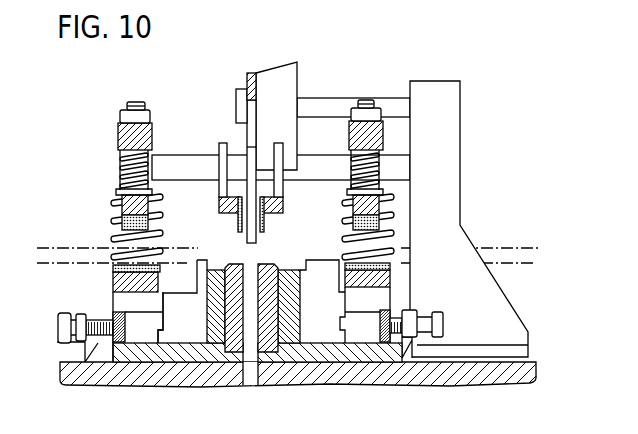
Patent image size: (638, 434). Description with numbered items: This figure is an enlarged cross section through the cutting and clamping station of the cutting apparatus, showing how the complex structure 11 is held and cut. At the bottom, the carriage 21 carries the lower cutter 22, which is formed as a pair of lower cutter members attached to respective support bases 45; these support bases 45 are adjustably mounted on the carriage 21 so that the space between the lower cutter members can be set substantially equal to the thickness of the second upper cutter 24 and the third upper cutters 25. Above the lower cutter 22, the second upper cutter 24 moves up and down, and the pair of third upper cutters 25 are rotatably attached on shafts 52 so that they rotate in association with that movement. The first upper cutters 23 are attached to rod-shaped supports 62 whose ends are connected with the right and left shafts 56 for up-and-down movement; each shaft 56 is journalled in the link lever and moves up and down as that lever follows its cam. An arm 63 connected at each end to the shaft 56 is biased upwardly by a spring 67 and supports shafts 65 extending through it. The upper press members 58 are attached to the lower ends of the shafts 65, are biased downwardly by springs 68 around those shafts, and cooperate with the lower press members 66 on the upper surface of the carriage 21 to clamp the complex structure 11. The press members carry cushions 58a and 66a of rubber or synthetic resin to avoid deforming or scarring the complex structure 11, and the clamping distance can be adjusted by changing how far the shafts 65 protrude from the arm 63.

The complex structure 11 is at (538, 251).
The carriage 21 is at (533, 368).
The lower cutter 22 is at (258, 268).
The first upper cutters 23 is at (238, 222).
The second upper cutter 24 is at (247, 76).
The third upper cutters 25 is at (250, 172).
The support bases 45 is at (188, 358).
The shafts 52 is at (318, 104).
The shaft 56 is at (167, 163).
The upper press members 58 is at (122, 197).
The cushion 58a is at (118, 222).
The supports 62 is at (218, 193).
The arm 63 is at (118, 128).
The shafts 65 is at (131, 100).
The lower press members 66 is at (113, 283).
The cushion 66a is at (112, 266).
The spring 67 is at (390, 236).
The springs 68 is at (122, 170).